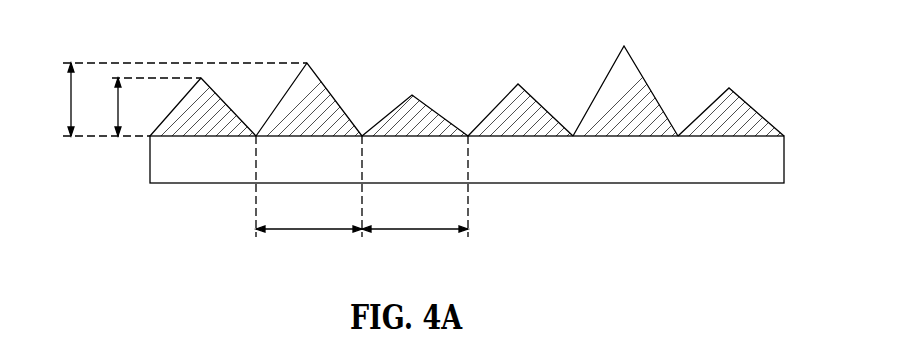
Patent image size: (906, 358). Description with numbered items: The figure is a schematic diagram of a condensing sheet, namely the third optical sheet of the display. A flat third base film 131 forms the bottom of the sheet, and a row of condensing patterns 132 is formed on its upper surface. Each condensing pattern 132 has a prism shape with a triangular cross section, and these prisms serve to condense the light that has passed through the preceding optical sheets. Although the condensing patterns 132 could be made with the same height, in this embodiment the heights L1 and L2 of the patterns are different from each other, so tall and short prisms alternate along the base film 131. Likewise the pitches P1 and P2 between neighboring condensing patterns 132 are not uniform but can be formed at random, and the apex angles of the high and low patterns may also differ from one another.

The third base film 131 is at (670, 165).
The condensing pattern 132 is at (617, 82).
The height of condensing pattern L1 is at (173, 99).
The height of condensing pattern L2 is at (144, 107).
The pitch of condensing patterns P1 is at (309, 197).
The pitch of condensing patterns P2 is at (415, 197).